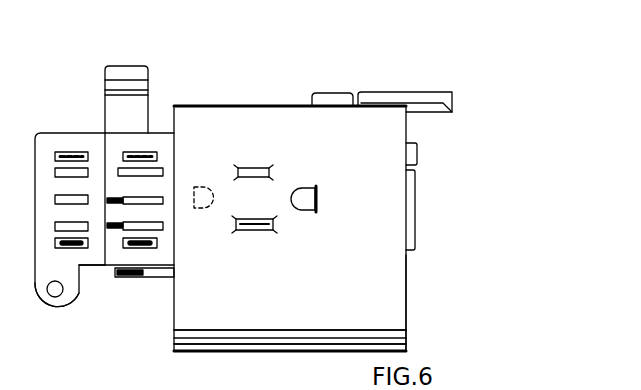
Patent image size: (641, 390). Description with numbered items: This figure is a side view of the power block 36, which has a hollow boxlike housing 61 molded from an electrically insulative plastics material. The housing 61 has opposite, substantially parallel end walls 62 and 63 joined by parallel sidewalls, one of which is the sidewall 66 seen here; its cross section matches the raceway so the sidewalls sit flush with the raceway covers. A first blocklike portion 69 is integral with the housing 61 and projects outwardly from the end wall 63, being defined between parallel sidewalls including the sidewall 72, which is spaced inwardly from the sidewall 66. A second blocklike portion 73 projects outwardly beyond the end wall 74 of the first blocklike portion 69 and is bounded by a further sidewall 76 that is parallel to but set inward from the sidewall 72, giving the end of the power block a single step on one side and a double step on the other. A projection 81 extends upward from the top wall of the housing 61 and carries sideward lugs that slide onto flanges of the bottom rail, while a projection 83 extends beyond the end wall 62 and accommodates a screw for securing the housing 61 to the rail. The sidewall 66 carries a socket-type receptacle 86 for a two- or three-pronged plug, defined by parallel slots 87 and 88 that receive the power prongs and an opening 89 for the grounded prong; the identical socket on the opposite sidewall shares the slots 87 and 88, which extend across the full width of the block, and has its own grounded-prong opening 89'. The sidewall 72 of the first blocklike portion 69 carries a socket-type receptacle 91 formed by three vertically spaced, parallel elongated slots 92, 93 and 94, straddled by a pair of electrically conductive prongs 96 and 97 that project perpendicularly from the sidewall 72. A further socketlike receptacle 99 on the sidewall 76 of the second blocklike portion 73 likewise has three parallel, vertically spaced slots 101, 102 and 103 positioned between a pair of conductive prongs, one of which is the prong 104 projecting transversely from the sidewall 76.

The power block 36 is at (267, 80).
The housing 61 is at (170, 340).
The end wall 62 is at (407, 277).
The end wall 63 is at (175, 313).
The sidewall 66 is at (322, 305).
The first blocklike portion 69 is at (162, 138).
The sidewall 72 is at (160, 253).
The second blocklike portion 73 is at (50, 147).
The end wall 74 is at (100, 250).
The sidewall 76 is at (55, 248).
The projection 81 is at (128, 74).
The projection 83 is at (423, 108).
The socket-type receptacle 86 is at (316, 162).
The slot 87 is at (249, 172).
The slot 88 is at (255, 232).
The opening 89 is at (322, 199).
The opening 89' is at (223, 199).
The socket-type receptacle 91 is at (114, 163).
The elongated slot 92 is at (164, 172).
The elongated slot 93 is at (143, 200).
The elongated slot 94 is at (147, 225).
The prong 96 is at (137, 152).
The prong 97 is at (128, 243).
The socketlike receptacle 99 is at (56, 261).
The slot 101 is at (55, 173).
The slot 102 is at (55, 200).
The slot 103 is at (55, 227).
The prong 104 is at (78, 153).